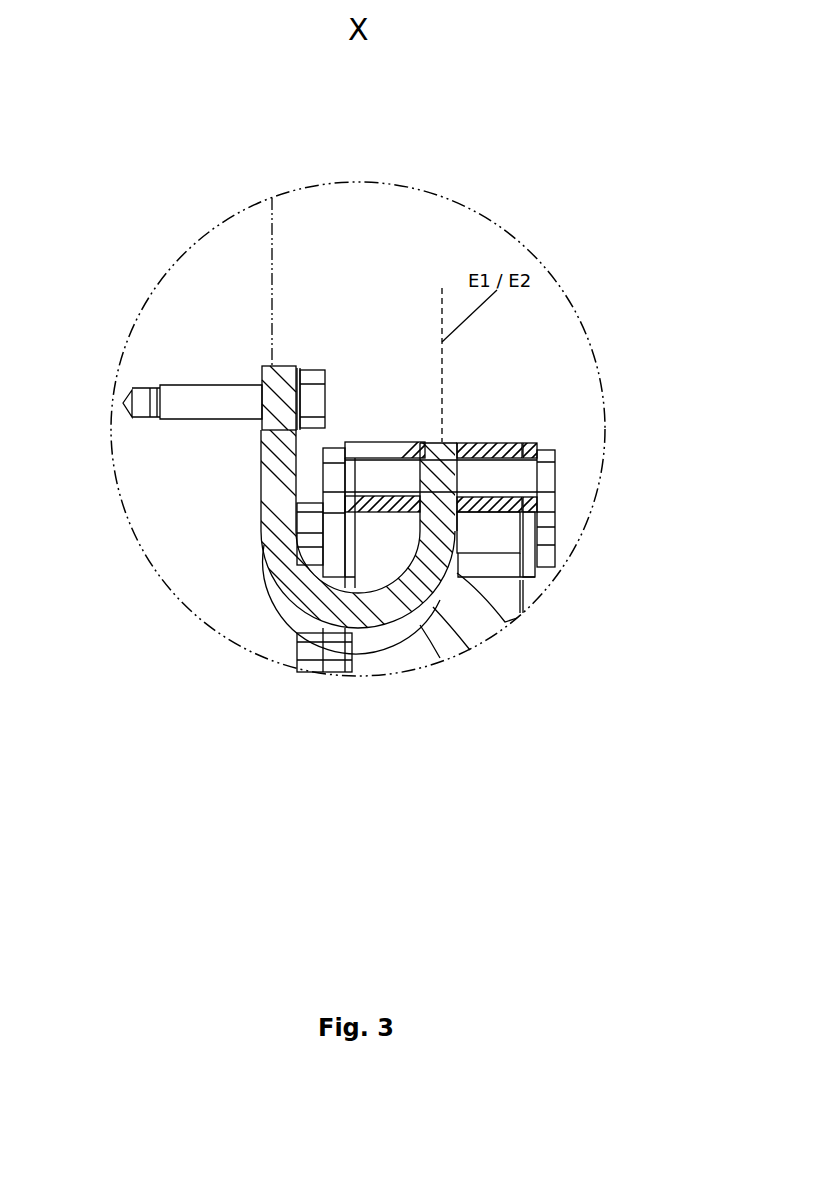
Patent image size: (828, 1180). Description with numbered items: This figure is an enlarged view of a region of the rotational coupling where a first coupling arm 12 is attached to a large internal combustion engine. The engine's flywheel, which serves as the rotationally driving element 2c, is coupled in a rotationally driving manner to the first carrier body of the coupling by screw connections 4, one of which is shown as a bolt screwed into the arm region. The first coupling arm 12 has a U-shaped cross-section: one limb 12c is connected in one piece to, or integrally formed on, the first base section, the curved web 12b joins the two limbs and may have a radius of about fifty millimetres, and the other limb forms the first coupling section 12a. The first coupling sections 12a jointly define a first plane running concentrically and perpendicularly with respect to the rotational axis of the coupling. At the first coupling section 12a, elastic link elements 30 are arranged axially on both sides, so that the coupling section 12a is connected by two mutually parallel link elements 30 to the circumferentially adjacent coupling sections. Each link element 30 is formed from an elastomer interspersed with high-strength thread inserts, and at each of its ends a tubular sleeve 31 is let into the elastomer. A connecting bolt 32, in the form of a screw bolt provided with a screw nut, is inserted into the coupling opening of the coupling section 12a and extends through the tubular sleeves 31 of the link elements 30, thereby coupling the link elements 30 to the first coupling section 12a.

The rotationally driving element 2c is at (233, 253).
The screw connection 4 is at (190, 427).
The first coupling arm 12 is at (414, 526).
The first coupling section 12a is at (450, 442).
The web 12b is at (380, 614).
The limb 12c is at (281, 532).
The link element 30 is at (402, 442).
The tubular sleeve 31 is at (380, 442).
The connecting bolt 32 is at (540, 477).